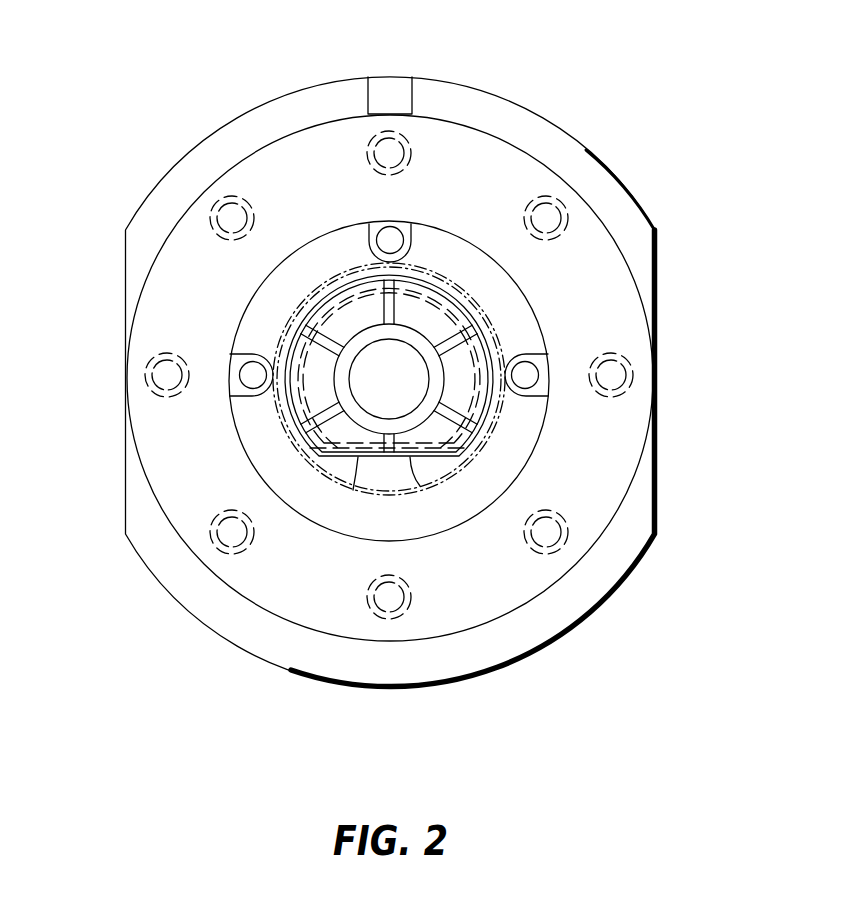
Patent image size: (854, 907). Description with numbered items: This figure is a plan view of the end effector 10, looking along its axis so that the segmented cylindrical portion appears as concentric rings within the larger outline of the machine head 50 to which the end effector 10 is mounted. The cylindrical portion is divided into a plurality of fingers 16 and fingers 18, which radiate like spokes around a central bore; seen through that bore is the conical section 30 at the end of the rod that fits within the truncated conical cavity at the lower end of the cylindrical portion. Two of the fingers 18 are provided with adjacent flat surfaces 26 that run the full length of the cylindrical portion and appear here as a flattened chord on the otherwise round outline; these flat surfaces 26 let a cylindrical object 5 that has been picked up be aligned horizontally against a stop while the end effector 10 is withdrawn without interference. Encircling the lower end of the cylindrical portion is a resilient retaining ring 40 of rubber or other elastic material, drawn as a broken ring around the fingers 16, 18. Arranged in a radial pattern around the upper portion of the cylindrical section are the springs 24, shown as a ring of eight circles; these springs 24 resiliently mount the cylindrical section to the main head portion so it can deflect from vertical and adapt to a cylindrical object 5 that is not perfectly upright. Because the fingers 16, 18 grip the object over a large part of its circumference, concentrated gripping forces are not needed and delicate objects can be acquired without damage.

The end effector 10 is at (121, 164).
The machine head 50 is at (622, 217).
The springs 24 is at (393, 133).
The cylindrical object 5 is at (345, 478).
The conical section 30 is at (317, 470).
The fingers 18 is at (330, 430).
The resilient retaining ring 40 is at (304, 404).
The fingers 16 is at (343, 317).
The flat surfaces 26 is at (328, 483).